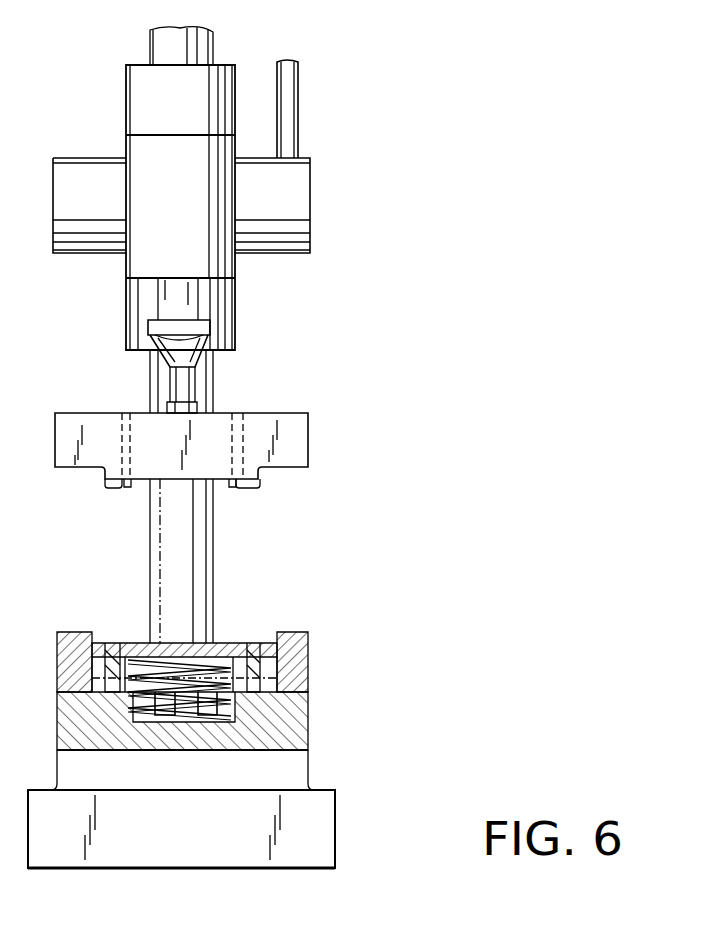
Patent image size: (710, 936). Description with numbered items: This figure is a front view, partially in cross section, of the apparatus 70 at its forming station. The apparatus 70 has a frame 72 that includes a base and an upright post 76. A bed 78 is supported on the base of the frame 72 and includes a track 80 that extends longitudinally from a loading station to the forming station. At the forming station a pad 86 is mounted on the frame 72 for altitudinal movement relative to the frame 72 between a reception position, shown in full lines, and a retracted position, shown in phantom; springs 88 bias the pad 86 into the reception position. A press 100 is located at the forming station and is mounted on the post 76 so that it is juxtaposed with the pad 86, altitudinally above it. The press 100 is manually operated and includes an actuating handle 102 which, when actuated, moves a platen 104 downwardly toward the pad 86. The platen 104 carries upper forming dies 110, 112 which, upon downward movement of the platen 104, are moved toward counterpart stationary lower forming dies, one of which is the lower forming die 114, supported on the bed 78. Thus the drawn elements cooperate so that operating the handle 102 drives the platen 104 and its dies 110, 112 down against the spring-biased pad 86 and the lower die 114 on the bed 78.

The apparatus 70 is at (337, 855).
The frame 72 is at (300, 772).
The bed 78 is at (298, 720).
The springs 88 is at (208, 722).
The track 80 is at (100, 640).
The lower forming die 114 is at (118, 642).
The pad 86 is at (232, 648).
The post 76 is at (215, 556).
The platen 104 is at (283, 420).
The upper forming die 110 is at (106, 485).
The upper forming die 112 is at (128, 490).
The press 100 is at (238, 263).
The actuating handle 102 is at (298, 90).